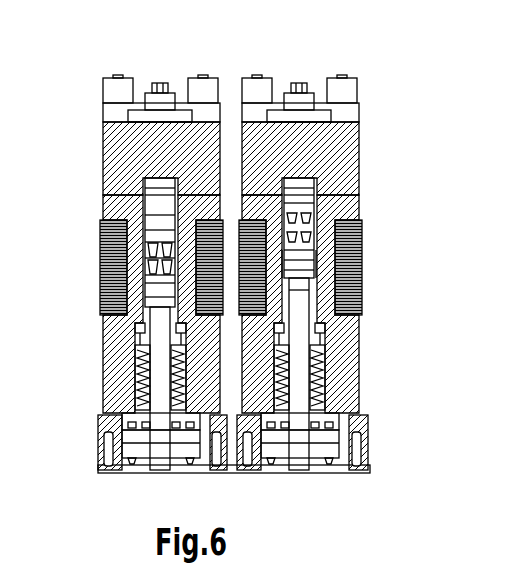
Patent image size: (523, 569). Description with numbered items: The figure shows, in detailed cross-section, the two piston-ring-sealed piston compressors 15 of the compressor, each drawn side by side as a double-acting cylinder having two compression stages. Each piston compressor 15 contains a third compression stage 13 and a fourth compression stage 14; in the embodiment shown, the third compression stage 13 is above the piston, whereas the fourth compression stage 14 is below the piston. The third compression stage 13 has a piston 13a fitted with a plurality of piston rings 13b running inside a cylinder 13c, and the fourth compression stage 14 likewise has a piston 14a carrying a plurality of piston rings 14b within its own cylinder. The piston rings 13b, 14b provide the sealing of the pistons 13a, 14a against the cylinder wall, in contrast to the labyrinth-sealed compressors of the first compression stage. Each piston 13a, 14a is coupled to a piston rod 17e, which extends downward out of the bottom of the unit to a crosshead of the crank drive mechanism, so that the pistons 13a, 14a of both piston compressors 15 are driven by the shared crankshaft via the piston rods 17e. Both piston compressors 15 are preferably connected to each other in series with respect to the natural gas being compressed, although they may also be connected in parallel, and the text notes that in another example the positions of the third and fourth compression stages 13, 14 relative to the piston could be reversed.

The third compression stage 13 is at (240, 222).
The piston 13a is at (155, 215).
The piston rings 13b is at (152, 232).
The cylinder 13c is at (100, 305).
The fourth compression stage 14 is at (241, 351).
The piston 14a is at (310, 274).
The piston rings 14b is at (318, 258).
The piston compressor 15 is at (161, 62).
The piston rod 17e is at (160, 437).